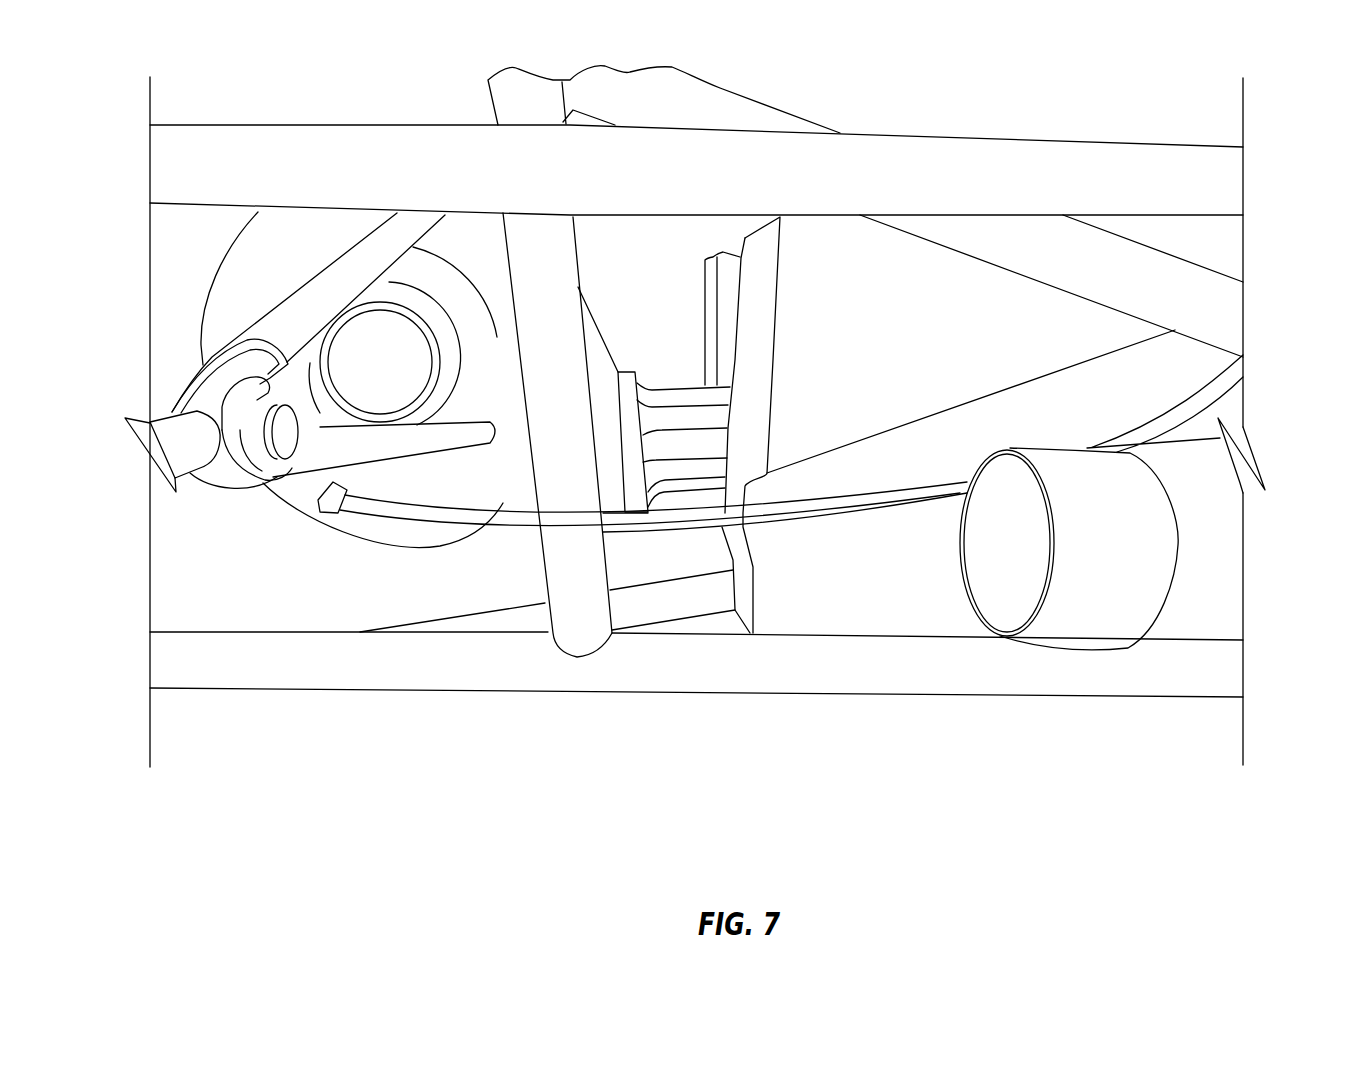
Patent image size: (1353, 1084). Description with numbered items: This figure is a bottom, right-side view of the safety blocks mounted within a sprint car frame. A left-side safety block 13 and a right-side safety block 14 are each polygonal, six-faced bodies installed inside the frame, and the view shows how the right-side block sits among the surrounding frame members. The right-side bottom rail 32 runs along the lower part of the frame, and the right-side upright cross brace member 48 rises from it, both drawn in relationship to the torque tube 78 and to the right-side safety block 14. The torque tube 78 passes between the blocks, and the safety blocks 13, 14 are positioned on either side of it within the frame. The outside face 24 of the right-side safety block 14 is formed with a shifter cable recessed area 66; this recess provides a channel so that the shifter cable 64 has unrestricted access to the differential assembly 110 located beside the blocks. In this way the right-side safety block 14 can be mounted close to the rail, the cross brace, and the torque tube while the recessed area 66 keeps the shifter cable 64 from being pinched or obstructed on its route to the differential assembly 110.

The left-side safety block 13 is at (713, 250).
The right-side safety block 14 is at (1050, 341).
The outside (right) face 24 is at (900, 362).
The right-side bottom rail 32 is at (927, 685).
The right-side upright cross brace member 48 is at (1213, 292).
The shifter cable 64 is at (685, 527).
The shifter cable recessed area 66 is at (798, 530).
The torque tube 78 is at (668, 437).
The differential assembly 110 is at (390, 538).